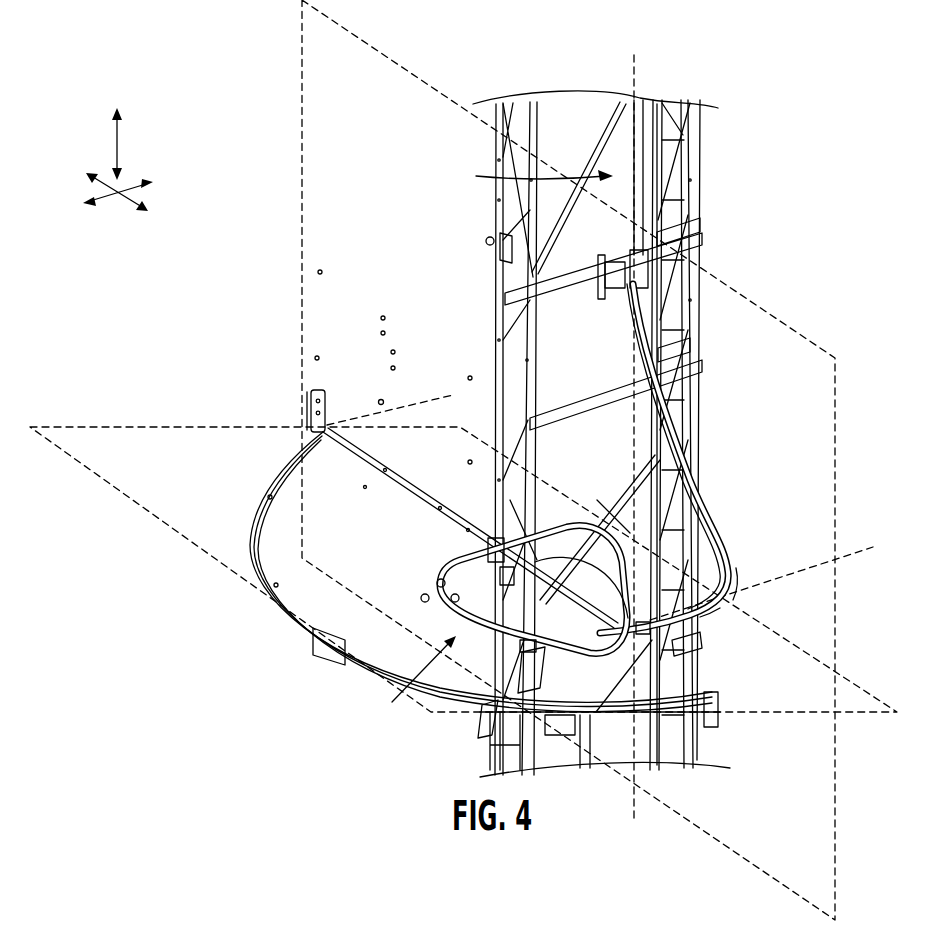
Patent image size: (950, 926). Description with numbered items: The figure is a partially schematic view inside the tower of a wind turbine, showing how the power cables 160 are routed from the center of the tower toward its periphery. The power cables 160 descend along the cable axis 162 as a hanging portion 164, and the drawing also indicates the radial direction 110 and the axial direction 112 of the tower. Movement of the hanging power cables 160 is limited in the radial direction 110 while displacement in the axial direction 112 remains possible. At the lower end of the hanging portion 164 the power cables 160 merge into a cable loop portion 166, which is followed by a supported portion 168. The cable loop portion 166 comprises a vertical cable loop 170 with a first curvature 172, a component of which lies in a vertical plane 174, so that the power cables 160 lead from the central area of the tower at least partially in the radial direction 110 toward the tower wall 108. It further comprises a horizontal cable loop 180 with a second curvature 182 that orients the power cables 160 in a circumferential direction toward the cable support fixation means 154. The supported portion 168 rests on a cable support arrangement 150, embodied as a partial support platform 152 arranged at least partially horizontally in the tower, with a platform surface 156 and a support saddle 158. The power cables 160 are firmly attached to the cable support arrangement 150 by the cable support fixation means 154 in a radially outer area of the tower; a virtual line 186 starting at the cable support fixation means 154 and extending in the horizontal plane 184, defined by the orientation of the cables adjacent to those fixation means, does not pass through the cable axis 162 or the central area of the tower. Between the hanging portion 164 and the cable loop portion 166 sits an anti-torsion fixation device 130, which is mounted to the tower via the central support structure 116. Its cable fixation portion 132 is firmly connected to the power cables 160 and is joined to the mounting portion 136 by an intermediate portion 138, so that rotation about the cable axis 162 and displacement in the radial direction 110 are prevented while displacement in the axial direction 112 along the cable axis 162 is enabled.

The tower wall 108 is at (378, 403).
The radial direction 110 is at (118, 196).
The axial direction 112 is at (120, 148).
The central support structure 116 is at (690, 384).
The anti-torsion fixation device 130 is at (594, 293).
The cable fixation portion 132 is at (652, 272).
The mounting portion 136 is at (488, 237).
The intermediate portion 138 is at (545, 279).
The cable support arrangement 150 is at (336, 691).
The support platform 152 is at (298, 446).
The cable support fixation means 154 is at (690, 660).
The platform surface 156 is at (381, 586).
The support saddle 158 is at (580, 548).
The power cable 160 is at (657, 197).
The cable axis 162 is at (636, 81).
The hanging portion 164 is at (524, 160).
The cable loop portion 166 is at (742, 521).
The supported portion 168 is at (407, 684).
The vertical cable loop 170 is at (682, 402).
The first curvature 172 is at (688, 462).
The vertical plane 174 is at (758, 845).
The horizontal cable loop 180 is at (712, 617).
The second curvature 182 is at (740, 575).
The horizontal plane 184 is at (222, 563).
The virtual line 186 is at (832, 562).